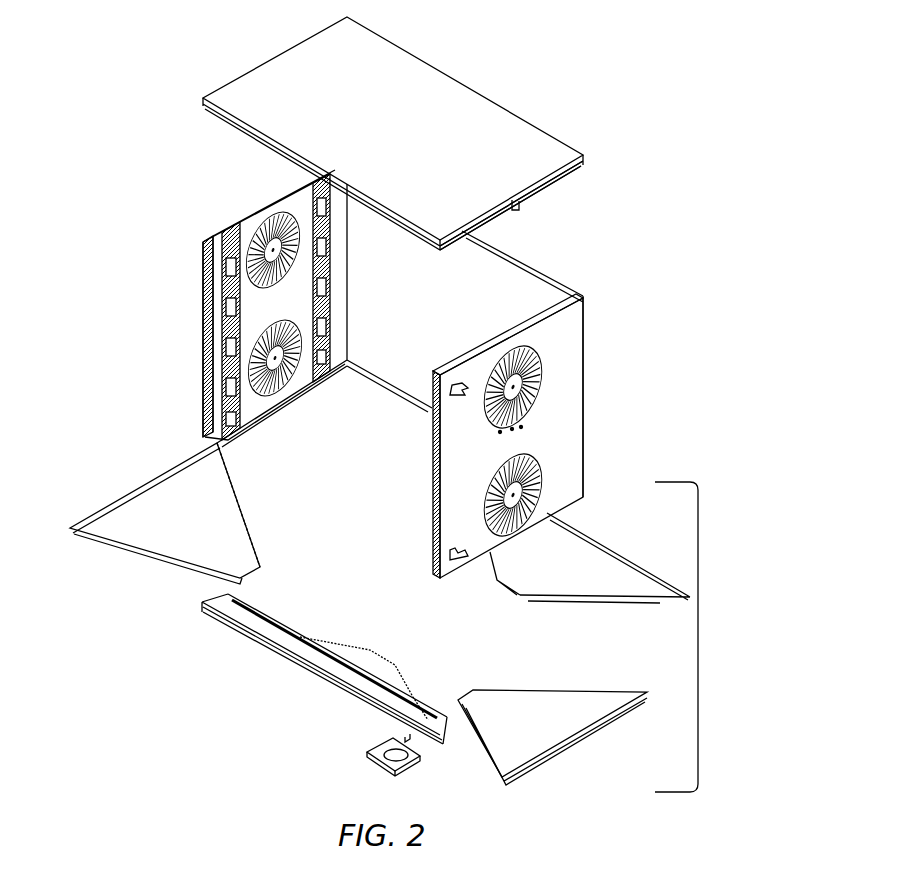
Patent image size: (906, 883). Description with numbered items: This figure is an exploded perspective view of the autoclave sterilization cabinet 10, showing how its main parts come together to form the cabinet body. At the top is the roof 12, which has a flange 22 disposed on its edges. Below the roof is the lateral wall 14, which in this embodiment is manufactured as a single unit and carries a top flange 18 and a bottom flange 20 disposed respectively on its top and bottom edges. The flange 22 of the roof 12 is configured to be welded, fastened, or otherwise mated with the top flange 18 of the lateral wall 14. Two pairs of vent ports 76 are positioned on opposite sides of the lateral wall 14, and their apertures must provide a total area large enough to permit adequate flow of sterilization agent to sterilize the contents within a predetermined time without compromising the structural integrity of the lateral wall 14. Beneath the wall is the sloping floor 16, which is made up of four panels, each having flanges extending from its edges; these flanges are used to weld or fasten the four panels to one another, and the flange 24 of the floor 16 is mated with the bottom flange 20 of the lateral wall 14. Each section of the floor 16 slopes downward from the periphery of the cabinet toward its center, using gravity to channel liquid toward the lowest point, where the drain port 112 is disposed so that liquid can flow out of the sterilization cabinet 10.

The sterilization cabinet 10 is at (130, 148).
The roof 12 is at (522, 115).
The flange 22 is at (563, 168).
The top flange 18 is at (570, 288).
The bottom flange 20 is at (266, 405).
The lateral wall 14 is at (585, 407).
The vent ports 76 is at (550, 363).
The flange 24 is at (140, 483).
The floor 16 is at (698, 630).
The drain port 112 is at (380, 765).